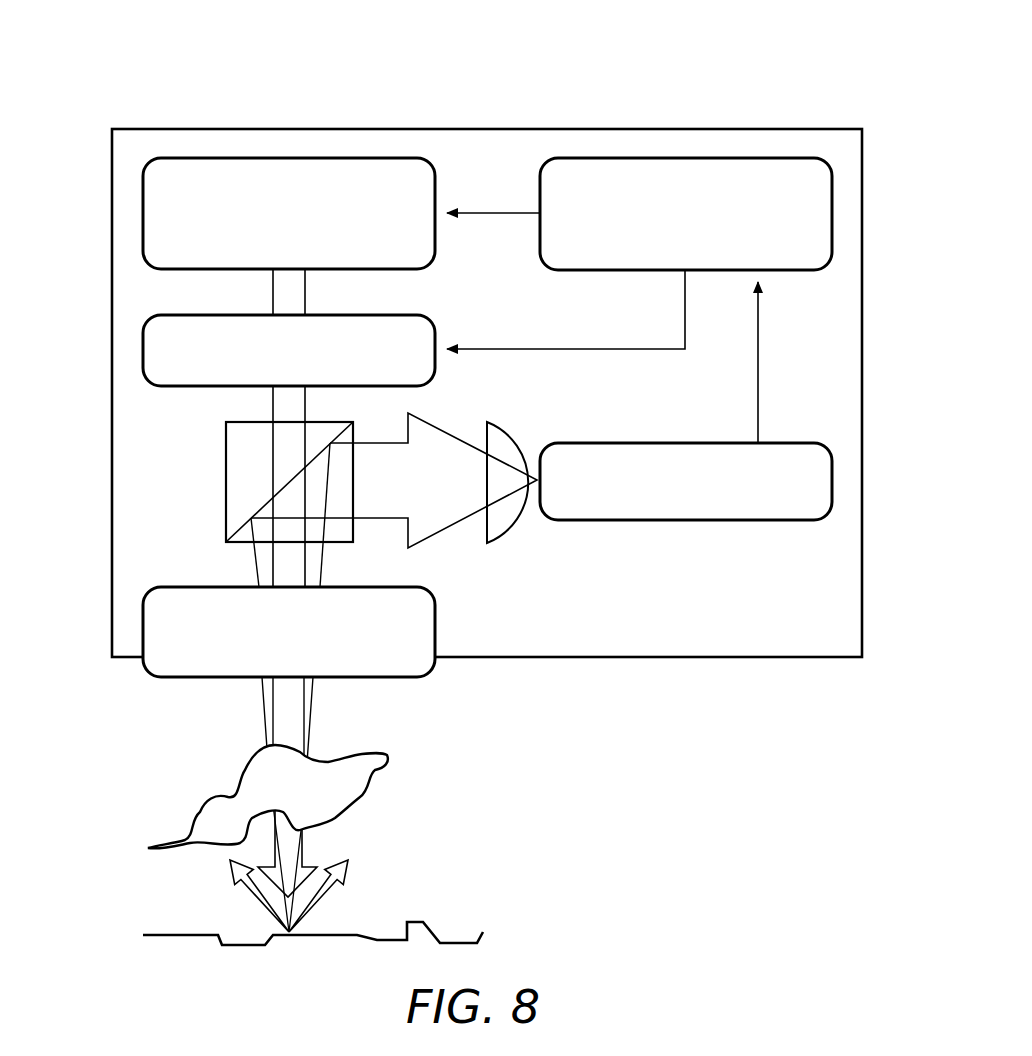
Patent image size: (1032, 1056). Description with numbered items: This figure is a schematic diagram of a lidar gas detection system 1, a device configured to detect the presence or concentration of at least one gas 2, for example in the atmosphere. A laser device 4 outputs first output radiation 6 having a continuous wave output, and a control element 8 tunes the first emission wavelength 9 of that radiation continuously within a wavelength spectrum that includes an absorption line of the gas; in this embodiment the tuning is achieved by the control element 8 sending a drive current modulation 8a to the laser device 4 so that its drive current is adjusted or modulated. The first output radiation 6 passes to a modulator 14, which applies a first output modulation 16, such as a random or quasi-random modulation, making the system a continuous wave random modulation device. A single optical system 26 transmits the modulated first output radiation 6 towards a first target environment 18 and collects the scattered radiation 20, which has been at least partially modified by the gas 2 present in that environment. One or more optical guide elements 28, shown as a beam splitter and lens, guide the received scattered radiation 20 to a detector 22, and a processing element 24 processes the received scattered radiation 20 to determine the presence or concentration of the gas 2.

The gas detection system 1 is at (852, 100).
The gas 2 is at (405, 794).
The laser device 4 is at (297, 227).
The first output radiation 6 is at (307, 292).
The control element 8 is at (677, 245).
The drive current modulation 8a is at (488, 211).
The first emission wavelength 9 is at (271, 292).
The modulator 14 is at (274, 363).
The first output modulation 16 is at (101, 293).
The first target environment 18 is at (163, 933).
The scattered radiation 20 is at (385, 441).
The detector 22 is at (671, 495).
The processing element 24 is at (744, 245).
The optical system 26 is at (274, 645).
The optical guide element 28 is at (225, 438).